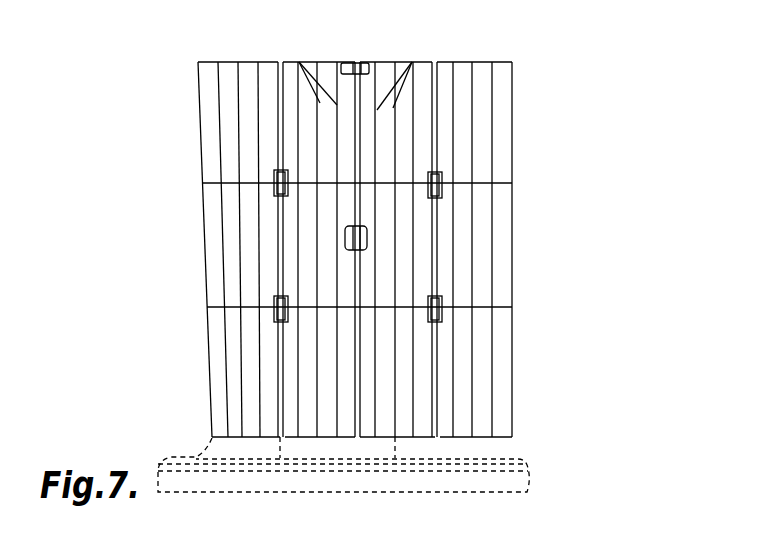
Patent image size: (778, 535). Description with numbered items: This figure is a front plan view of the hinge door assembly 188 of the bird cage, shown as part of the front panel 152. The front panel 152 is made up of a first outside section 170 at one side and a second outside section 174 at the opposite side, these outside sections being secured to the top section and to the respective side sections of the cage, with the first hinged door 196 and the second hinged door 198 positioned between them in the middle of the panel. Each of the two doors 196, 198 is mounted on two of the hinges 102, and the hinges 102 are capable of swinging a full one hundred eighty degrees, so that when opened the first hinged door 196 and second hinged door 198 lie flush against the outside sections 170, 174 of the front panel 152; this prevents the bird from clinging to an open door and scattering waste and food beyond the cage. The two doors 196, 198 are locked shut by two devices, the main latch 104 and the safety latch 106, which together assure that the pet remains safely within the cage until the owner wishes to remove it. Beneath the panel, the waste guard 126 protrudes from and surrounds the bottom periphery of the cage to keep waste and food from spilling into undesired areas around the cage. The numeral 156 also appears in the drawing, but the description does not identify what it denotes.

The hinges 102 is at (276, 194).
The main latch 104 is at (352, 252).
The safety latch 106 is at (362, 62).
The waste guard 126 is at (497, 453).
The front panel 152 is at (530, 162).
The panel 156 is at (21, 17).
The first outside section 170 is at (240, 61).
The second outside section 174 is at (492, 35).
The hinge door assembly 188 is at (541, 57).
The first hinged door 196 is at (299, 62).
The second hinged door 198 is at (412, 62).